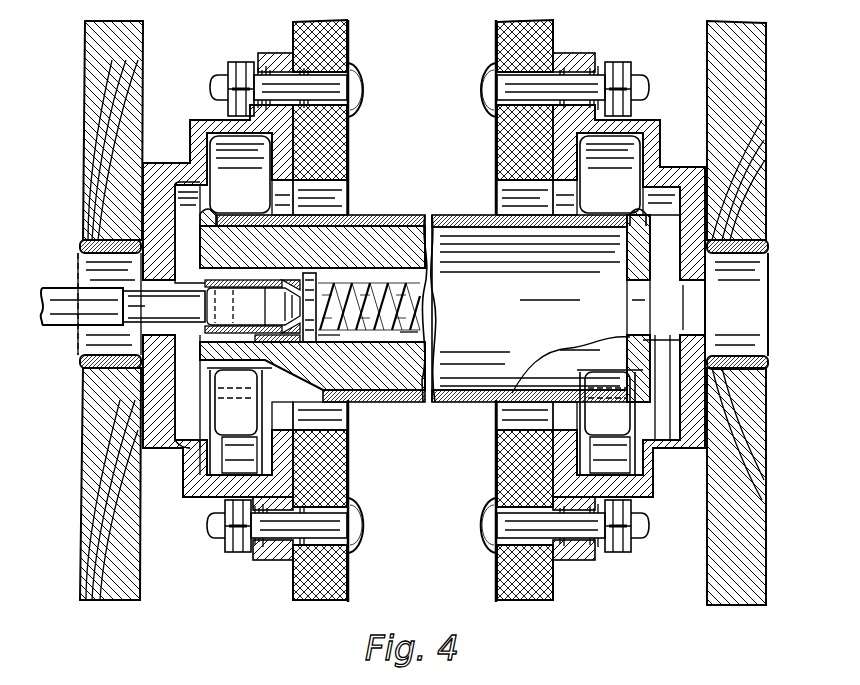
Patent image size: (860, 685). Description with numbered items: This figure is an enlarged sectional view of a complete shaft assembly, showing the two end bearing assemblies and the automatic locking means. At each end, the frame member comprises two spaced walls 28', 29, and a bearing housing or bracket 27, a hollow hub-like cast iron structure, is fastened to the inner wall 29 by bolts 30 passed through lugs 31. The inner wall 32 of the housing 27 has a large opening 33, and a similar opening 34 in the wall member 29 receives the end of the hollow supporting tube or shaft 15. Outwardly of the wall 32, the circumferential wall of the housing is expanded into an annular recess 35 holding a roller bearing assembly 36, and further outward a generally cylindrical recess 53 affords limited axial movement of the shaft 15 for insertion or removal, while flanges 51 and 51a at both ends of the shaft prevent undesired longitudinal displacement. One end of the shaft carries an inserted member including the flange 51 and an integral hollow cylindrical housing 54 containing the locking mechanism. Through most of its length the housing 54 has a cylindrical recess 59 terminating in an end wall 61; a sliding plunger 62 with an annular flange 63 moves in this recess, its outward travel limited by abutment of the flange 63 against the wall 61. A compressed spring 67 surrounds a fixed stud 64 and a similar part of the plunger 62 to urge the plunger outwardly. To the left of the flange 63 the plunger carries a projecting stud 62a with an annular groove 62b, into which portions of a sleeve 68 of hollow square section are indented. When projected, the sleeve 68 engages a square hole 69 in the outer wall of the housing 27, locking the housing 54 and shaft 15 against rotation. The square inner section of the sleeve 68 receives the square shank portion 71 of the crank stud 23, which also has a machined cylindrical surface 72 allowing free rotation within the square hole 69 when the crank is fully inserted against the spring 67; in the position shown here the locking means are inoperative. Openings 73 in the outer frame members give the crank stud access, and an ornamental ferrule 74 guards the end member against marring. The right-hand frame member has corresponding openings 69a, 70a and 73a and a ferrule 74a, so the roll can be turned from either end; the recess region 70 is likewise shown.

The supporting tube or shaft 15 is at (380, 214).
The crank stud 23 is at (62, 327).
The bearing housing or bracket 27 is at (160, 165).
The outer wall 28' is at (129, 310).
The inner wall 29 is at (292, 36).
The bolts 30 is at (363, 78).
The lugs 31 is at (256, 56).
The inner wall of the housing 32 is at (290, 158).
The large opening 33 is at (335, 190).
The opening 34 is at (300, 200).
The annular recess 35 is at (226, 146).
The roller bearing assembly 36 is at (187, 486).
The flange 51 is at (214, 211).
The flange 51a is at (637, 208).
The recess 53 is at (174, 450).
The housing 54 is at (412, 216).
The cylindrical recess 59 is at (356, 274).
The end wall 61 is at (187, 220).
The sliding plunger 62 is at (340, 333).
The projecting stud 62a is at (290, 296).
The annular groove 62b is at (268, 340).
The annular flange 63 is at (318, 278).
The stud 64 is at (410, 334).
The compressed spring 67 is at (389, 274).
The sleeve 68 is at (268, 306).
The square hole 69 is at (174, 274).
The opening 69a is at (703, 332).
The recess 70 is at (200, 336).
The opening 70a is at (632, 335).
The square shank portion 71 is at (236, 306).
The cylindrical surface 72 is at (180, 302).
The openings 73 is at (85, 269).
The opening 73a is at (757, 286).
The ornamental ferrule 74 is at (83, 242).
The ferrule 74a is at (768, 244).